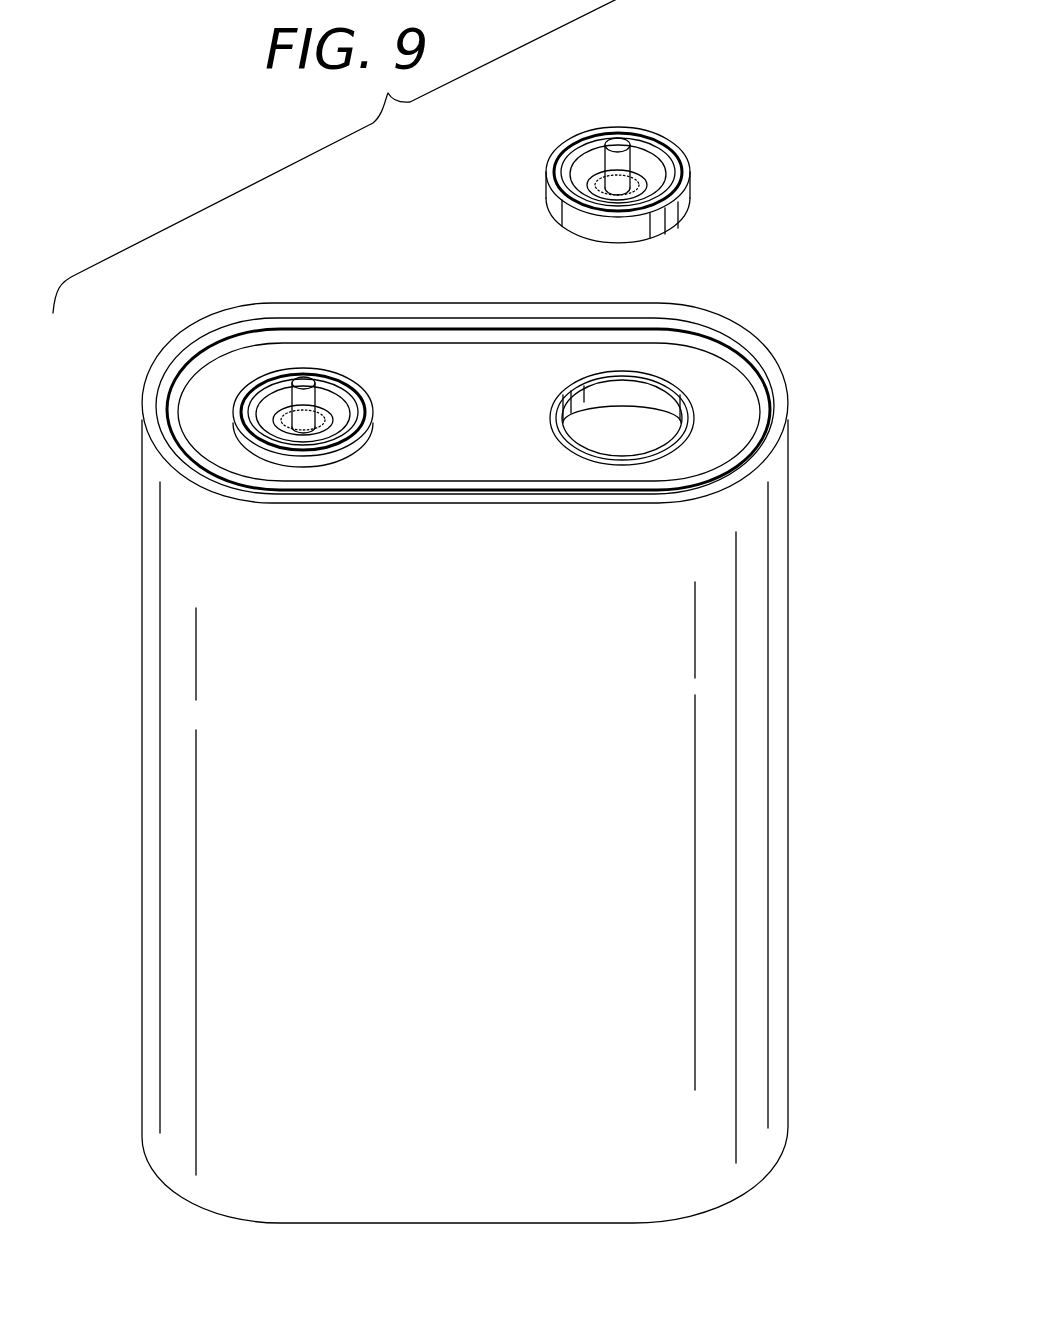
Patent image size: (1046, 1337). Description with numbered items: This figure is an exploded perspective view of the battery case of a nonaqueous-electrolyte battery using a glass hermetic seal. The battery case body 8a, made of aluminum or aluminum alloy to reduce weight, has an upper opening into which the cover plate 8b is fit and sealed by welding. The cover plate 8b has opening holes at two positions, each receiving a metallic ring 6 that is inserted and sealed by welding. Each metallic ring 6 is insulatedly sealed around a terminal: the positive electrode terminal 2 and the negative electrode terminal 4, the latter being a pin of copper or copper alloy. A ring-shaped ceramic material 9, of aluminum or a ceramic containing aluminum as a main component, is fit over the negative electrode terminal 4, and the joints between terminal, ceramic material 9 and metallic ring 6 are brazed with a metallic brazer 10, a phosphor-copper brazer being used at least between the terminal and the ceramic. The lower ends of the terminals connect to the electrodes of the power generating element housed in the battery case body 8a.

The positive electrode terminal 2 is at (620, 143).
The negative electrode terminal 4 is at (305, 384).
The metallic ring 6 is at (682, 224).
The battery case body 8a is at (748, 802).
The cover plate 8b is at (485, 363).
The ceramic material 9 is at (597, 170).
The metallic brazer 10 is at (663, 160).